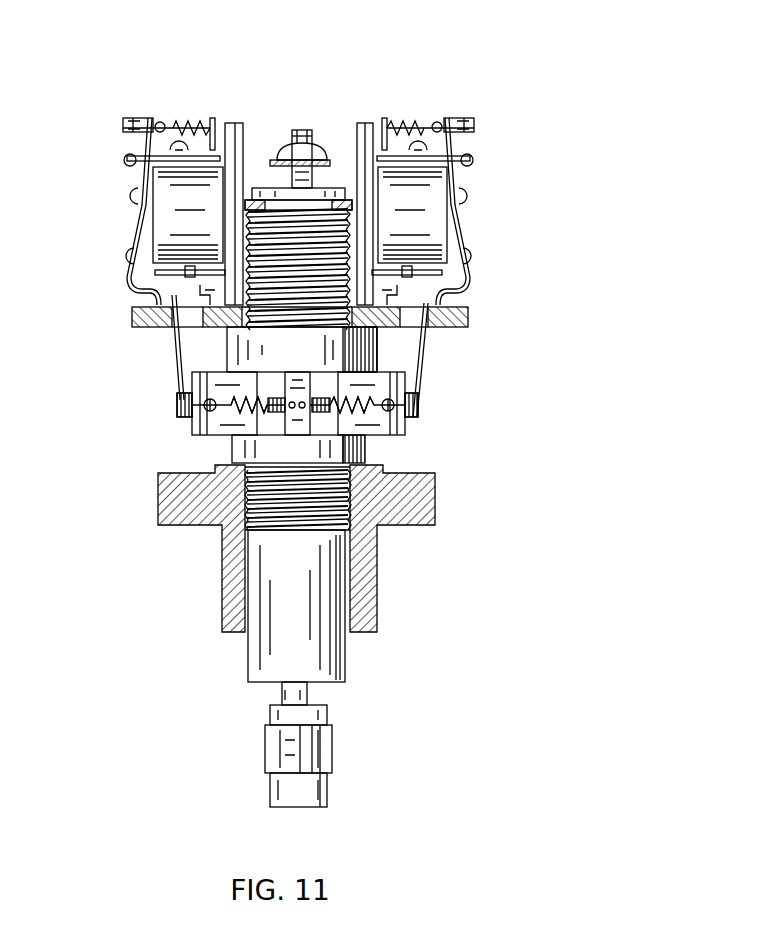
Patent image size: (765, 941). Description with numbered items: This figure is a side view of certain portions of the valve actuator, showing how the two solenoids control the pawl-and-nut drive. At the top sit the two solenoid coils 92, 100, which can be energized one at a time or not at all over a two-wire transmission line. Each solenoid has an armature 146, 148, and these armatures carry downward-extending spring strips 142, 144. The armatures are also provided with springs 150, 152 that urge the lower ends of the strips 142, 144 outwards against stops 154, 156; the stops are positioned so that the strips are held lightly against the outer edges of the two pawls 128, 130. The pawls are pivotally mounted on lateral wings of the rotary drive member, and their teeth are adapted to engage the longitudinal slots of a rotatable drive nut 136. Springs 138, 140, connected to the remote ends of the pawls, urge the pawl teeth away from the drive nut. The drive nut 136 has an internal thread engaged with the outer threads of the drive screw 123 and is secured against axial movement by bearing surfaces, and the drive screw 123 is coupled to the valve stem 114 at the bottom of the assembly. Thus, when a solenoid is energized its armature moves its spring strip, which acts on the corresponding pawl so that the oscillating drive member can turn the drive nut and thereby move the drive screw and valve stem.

The spring 150 is at (190, 117).
The spring 152 is at (408, 120).
The armature 146 is at (140, 180).
The armature 148 is at (472, 183).
The solenoid coil 92 is at (175, 213).
The solenoid coil 100 is at (417, 218).
The stop 154 is at (165, 330).
The stop 156 is at (432, 330).
The spring 138 is at (240, 398).
The spring 140 is at (360, 400).
The spring strip 142 is at (175, 380).
The spring strip 144 is at (425, 380).
The pawl 128 is at (185, 420).
The pawl 130 is at (425, 420).
The drive nut 136 is at (360, 452).
The drive screw 123 is at (348, 663).
The valve stem 114 is at (275, 742).